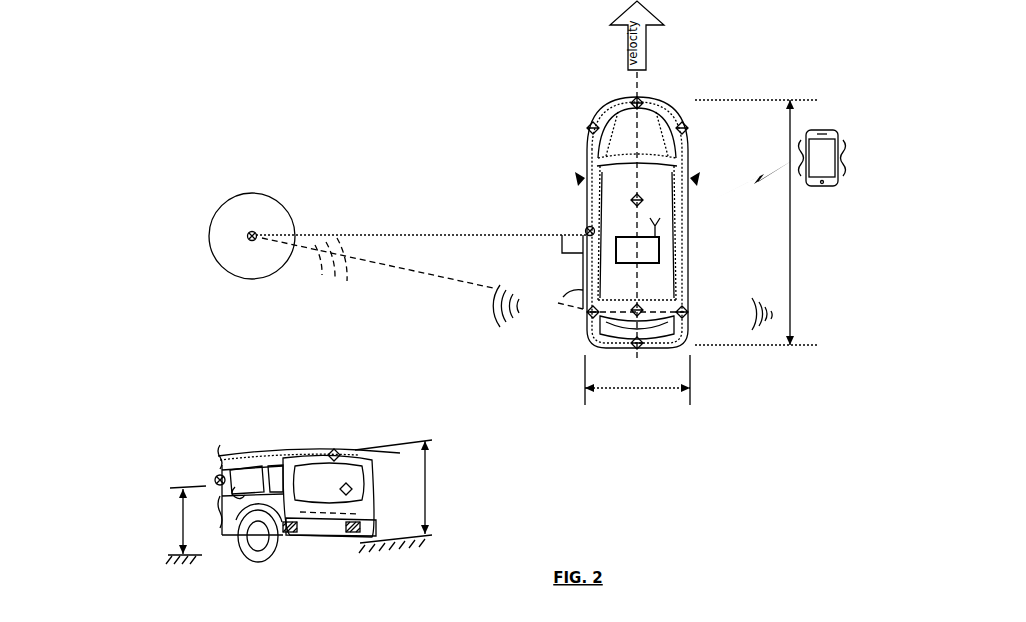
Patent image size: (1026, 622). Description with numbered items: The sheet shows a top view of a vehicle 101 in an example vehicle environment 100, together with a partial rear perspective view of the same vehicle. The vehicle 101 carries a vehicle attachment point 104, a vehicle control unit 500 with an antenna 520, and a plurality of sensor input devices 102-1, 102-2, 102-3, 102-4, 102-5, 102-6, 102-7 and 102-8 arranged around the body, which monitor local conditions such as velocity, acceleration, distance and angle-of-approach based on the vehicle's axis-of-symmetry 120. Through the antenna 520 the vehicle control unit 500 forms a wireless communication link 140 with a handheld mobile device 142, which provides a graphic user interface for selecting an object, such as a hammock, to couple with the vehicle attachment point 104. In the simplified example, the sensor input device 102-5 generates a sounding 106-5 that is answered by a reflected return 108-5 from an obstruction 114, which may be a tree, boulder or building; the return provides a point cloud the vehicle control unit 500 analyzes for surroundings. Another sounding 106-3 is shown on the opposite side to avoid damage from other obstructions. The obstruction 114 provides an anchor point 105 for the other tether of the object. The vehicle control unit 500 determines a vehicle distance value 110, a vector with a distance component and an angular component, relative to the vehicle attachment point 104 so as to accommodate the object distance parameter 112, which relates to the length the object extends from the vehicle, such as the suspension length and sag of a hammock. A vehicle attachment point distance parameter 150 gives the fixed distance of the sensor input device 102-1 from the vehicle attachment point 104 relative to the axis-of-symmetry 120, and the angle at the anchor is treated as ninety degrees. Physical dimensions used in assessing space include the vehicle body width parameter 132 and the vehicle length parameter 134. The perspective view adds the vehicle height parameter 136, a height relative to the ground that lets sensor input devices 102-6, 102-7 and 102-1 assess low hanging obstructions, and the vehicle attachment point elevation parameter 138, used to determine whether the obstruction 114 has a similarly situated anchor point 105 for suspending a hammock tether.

In FIG. 1, the vehicle environment 100 is at (195, 132).
In FIG. 1, the vehicle 101 is at (688, 244).
In FIG. 2, the vehicle 101 is at (288, 446).
In FIG. 1, the sensor input device 102-1 is at (641, 99).
In FIG. 1, the sensor input device 102-2 is at (686, 126).
In FIG. 1, the sensor input device 102-3 is at (686, 308).
In FIG. 2, the sensor input device 102-3 is at (352, 532).
In FIG. 1, the sensor input device 102-4 is at (640, 348).
In FIG. 2, the sensor input device 102-4 is at (348, 495).
In FIG. 1, the sensor input device 102-5 is at (591, 318).
In FIG. 2, the sensor input device 102-5 is at (300, 532).
In FIG. 1, the sensor input device 102-6 is at (633, 309).
In FIG. 2, the sensor input device 102-6 is at (338, 452).
In FIG. 1, the sensor input device 102-7 is at (633, 199).
In FIG. 1, the sensor input device 102-8 is at (590, 126).
In FIG. 1, the vehicle attachment point 104 is at (585, 227).
In FIG. 2, the vehicle attachment point 104 is at (219, 472).
In FIG. 1, the anchor point 105 is at (251, 244).
In FIG. 1, the sounding 106-3 is at (786, 295).
In FIG. 1, the sounding 106-5 is at (506, 341).
In FIG. 1, the reflected return 108-5 is at (316, 284).
In FIG. 1, the vehicle distance value 110 is at (447, 287).
In FIG. 1, the object distance parameter 112 is at (442, 233).
In FIG. 1, the obstruction 114 is at (236, 282).
In FIG. 1, the axis-of-symmetry 120 is at (633, 93).
In FIG. 1, the vehicle body width parameter 132 is at (637, 394).
In FIG. 1, the vehicle length parameter 134 is at (795, 250).
In FIG. 2, the vehicle height parameter 136 is at (428, 510).
In FIG. 2, the vehicle attachment point elevation parameter 138 is at (176, 516).
In FIG. 1, the wireless communication link 140 is at (735, 196).
In FIG. 1, the handheld mobile device 142 is at (830, 122).
In FIG. 1, the vehicle attachment point distance parameter 150 is at (578, 287).
In FIG. 1, the vehicle control unit 500 is at (637, 250).
In FIG. 1, the antenna 520 is at (651, 229).